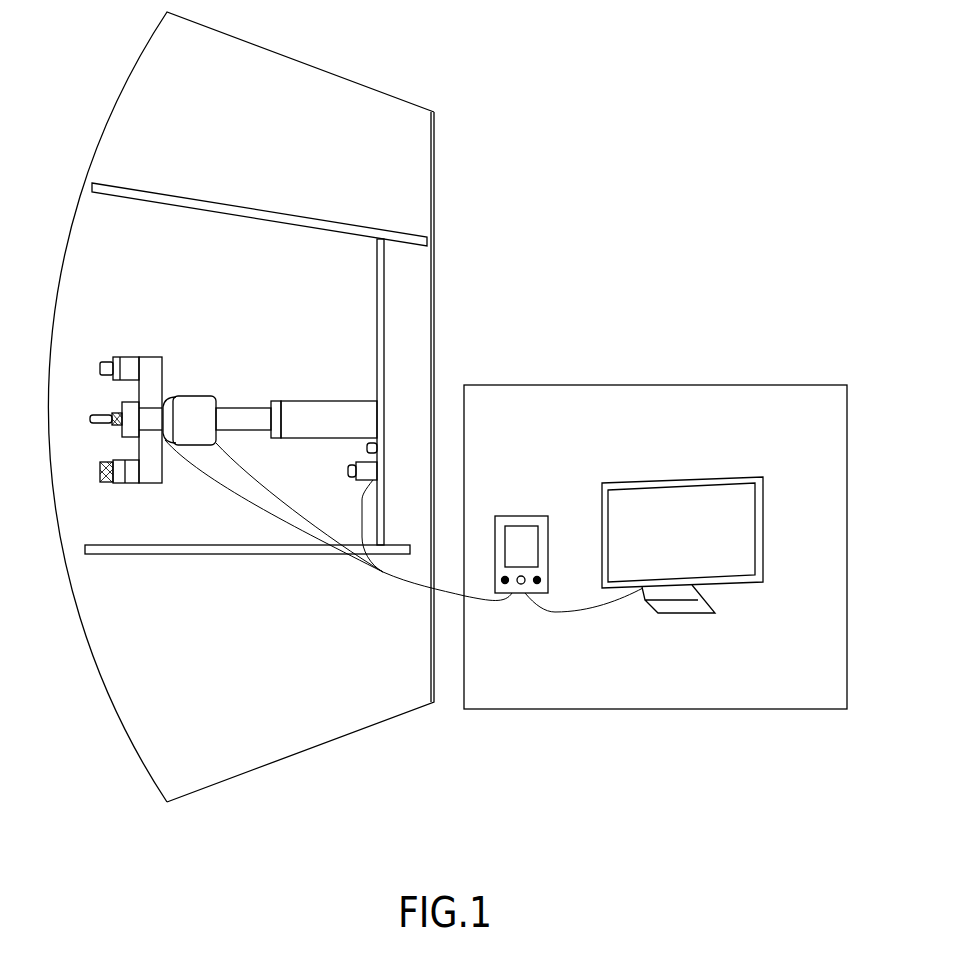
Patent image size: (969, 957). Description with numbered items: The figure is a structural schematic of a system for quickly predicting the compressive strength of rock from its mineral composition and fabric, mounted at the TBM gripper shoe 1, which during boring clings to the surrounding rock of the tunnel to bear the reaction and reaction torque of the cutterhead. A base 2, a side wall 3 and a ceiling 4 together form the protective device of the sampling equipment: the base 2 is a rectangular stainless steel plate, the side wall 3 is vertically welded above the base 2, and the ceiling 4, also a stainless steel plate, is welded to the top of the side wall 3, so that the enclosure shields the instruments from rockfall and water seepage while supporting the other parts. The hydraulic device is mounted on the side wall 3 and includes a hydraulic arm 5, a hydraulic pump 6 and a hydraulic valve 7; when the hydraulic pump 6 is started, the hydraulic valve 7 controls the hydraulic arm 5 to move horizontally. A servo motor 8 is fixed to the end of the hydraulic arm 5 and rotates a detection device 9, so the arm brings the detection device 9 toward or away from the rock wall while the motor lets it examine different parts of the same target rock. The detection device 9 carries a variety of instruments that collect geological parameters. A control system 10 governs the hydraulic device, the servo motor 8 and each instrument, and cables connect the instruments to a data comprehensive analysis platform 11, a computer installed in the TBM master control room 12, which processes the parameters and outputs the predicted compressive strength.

The TBM gripper shoe 1 is at (434, 187).
The base 2 is at (230, 553).
The side wall 3 is at (385, 343).
The ceiling 4 is at (235, 202).
The hydraulic arm 5 is at (352, 401).
The hydraulic pump 6 is at (375, 470).
The hydraulic valve 7 is at (380, 447).
The servo motor 8 is at (202, 394).
The detection device 9 is at (150, 357).
The control system 10 is at (512, 593).
The data comprehensive analysis platform 11 is at (733, 585).
The TBM master control room 12 is at (685, 385).